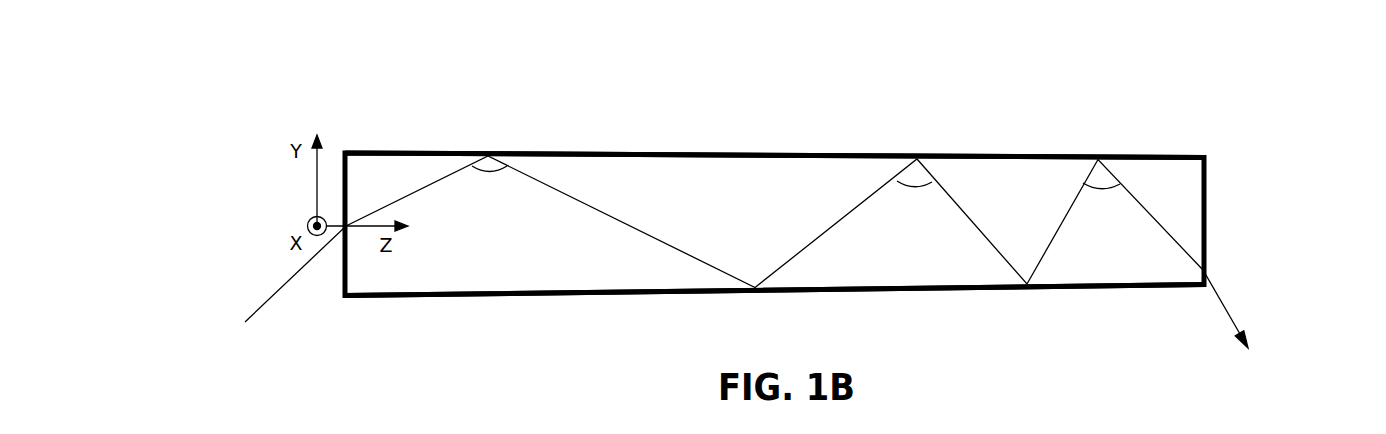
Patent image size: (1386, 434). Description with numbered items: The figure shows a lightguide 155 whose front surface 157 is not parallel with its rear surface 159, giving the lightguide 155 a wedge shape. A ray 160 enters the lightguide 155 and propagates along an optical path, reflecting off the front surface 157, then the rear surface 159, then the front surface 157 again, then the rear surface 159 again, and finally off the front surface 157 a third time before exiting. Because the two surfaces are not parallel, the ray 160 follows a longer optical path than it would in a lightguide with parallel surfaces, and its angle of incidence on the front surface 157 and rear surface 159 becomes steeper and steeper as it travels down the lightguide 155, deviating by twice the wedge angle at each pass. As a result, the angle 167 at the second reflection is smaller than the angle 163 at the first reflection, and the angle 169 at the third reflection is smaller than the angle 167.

The lightguide 155 is at (1228, 129).
The front surface 157 is at (618, 151).
The rear surface 159 is at (874, 293).
The ray 160 is at (290, 283).
The angle 163 is at (497, 177).
The angle 167 is at (900, 197).
The angle 169 is at (1092, 198).